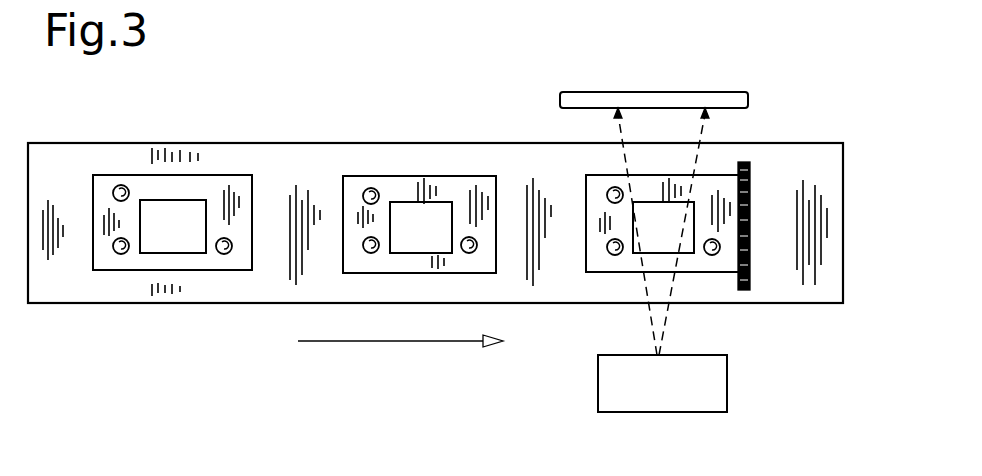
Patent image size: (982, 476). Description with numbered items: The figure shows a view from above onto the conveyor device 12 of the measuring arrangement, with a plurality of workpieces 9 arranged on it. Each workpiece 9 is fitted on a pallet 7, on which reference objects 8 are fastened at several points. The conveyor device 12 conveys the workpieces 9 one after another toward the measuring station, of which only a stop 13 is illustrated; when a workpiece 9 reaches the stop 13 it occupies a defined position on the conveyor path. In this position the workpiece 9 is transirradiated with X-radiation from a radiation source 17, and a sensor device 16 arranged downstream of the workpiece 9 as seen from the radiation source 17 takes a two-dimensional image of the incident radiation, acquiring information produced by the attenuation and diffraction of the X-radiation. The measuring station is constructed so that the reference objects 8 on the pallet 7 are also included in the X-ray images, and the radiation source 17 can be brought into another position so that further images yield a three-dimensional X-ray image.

The pallet 7 is at (252, 248).
The reference objects 8 is at (113, 193).
The workpiece 9 is at (186, 244).
The conveyor device 12 is at (262, 141).
The stop 13 is at (745, 240).
The sensor device 16 is at (558, 100).
The radiation source 17 is at (671, 400).